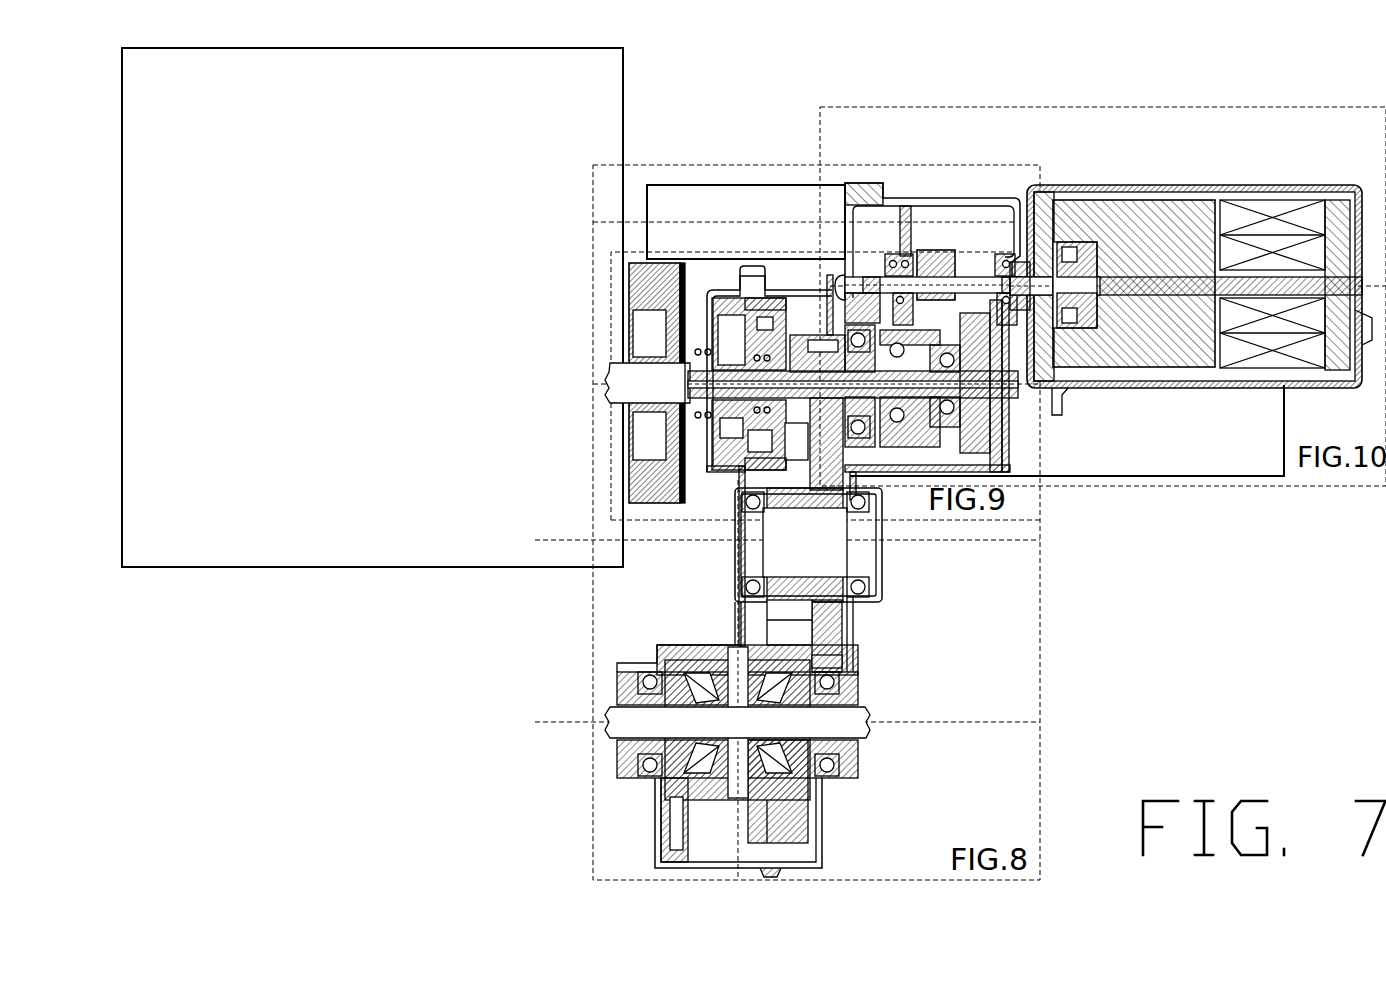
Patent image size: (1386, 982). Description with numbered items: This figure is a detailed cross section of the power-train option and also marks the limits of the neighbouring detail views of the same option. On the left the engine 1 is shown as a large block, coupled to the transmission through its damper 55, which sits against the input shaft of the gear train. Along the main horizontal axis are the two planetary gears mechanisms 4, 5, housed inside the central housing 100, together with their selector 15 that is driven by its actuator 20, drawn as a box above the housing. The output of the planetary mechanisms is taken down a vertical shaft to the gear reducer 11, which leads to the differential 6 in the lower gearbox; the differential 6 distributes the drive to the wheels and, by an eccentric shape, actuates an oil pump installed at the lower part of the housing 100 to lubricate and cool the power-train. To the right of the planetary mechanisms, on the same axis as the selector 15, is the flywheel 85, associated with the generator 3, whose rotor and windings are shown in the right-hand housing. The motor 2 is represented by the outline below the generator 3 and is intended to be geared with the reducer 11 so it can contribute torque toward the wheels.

The engine 1 is at (167, 568).
The motor 2 is at (1092, 478).
The generator 3 is at (1250, 385).
The planetary gears mechanism 4 is at (760, 350).
The planetary gears mechanism 5 is at (730, 347).
The differential 6 is at (618, 690).
The gear reducer 11 is at (843, 633).
The selector 15 is at (976, 235).
The actuator 20 is at (810, 183).
The damper 55 is at (638, 502).
The flywheel 85 is at (1177, 383).
The housing 100 is at (822, 840).